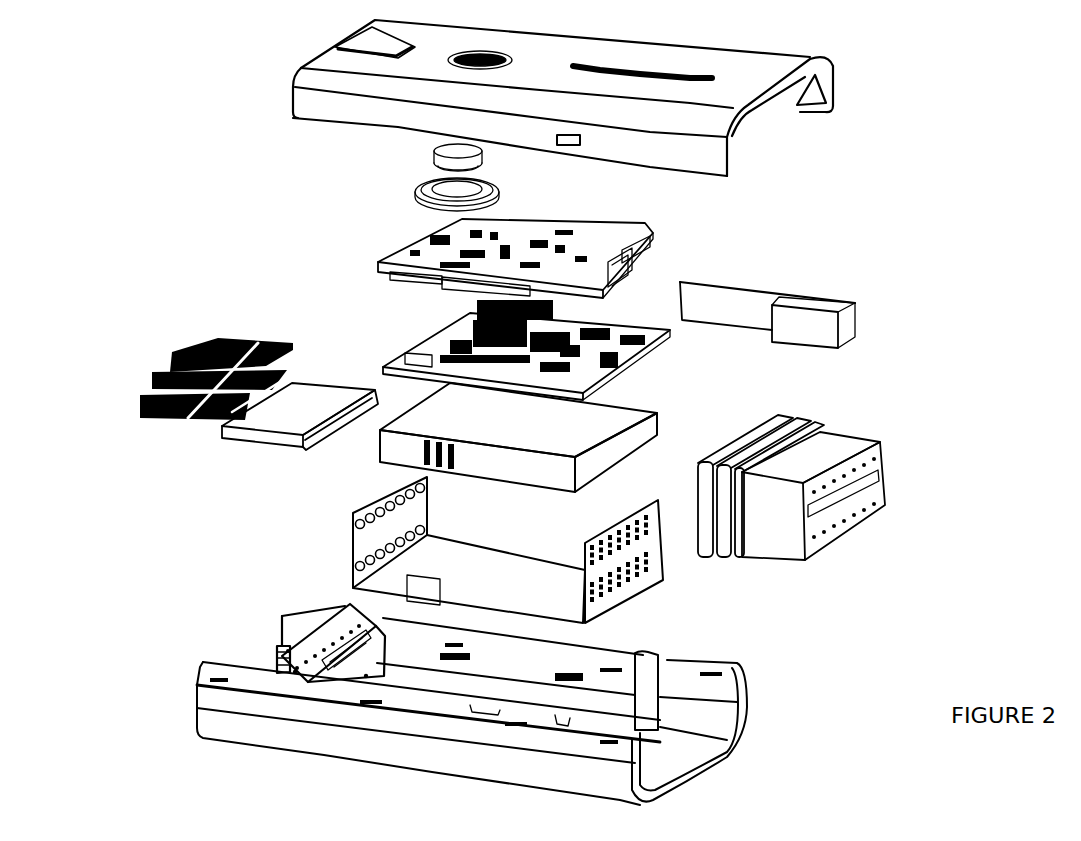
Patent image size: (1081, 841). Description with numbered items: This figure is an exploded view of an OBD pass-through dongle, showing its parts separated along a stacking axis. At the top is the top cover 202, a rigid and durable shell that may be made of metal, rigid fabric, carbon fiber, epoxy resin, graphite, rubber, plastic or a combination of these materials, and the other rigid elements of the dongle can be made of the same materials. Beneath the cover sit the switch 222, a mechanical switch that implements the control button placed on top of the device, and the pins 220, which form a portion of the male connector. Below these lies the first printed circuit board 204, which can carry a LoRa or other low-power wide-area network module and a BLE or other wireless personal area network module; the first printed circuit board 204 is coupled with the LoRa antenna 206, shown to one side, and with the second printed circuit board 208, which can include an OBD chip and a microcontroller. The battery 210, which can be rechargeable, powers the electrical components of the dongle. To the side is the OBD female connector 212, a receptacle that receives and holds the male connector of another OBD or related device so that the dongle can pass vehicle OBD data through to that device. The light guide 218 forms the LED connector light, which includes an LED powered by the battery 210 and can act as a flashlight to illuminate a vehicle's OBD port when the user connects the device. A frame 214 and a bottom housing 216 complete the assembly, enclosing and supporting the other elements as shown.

The top cover 202 is at (800, 89).
The PCB 1 204 is at (640, 253).
The LoRa antenna 206 is at (863, 302).
The PCB 2 208 is at (672, 370).
The battery 210 is at (615, 440).
The OBD female connector 212 is at (818, 517).
The frame 214 is at (633, 600).
The bottom housing 216 is at (678, 768).
The light guide 218 is at (178, 357).
The pins 220 is at (433, 205).
The switch 222 is at (437, 165).